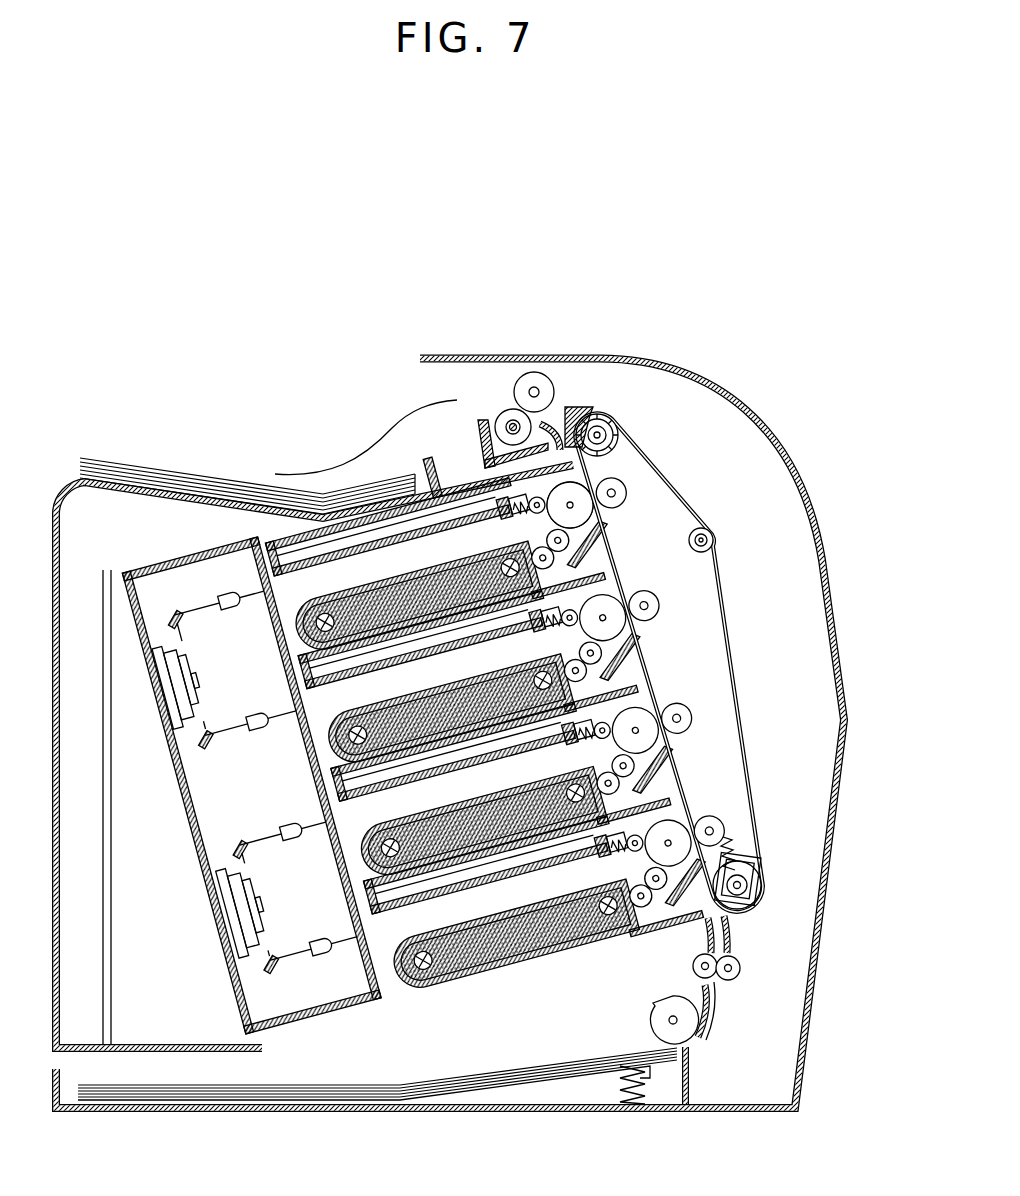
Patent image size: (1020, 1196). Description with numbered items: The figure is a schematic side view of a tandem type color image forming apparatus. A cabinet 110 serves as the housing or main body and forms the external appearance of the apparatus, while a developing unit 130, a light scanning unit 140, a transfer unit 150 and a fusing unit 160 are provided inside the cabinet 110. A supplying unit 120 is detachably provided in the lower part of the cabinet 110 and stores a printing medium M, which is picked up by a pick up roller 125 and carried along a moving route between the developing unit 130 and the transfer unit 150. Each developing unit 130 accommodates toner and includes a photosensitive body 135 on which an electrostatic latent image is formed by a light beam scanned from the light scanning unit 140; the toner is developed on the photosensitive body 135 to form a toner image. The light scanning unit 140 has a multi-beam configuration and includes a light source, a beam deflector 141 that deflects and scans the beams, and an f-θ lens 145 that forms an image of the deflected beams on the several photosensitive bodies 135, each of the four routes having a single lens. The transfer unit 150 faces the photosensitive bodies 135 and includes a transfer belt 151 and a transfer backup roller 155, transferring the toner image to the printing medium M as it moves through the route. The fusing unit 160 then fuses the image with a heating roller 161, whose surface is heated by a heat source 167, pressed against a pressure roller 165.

The cabinet 110 is at (548, 356).
The supplying unit 120 is at (712, 1082).
The pick up roller 125 is at (668, 1010).
The developing unit 130 is at (283, 645).
The photosensitive body 135 is at (600, 520).
The light scanning unit 140 is at (148, 558).
The beam deflector 141 is at (193, 655).
The f-θ lens 145 is at (235, 600).
The transfer unit 150 is at (733, 659).
The transfer belt 151 is at (730, 657).
The transfer backup roller 155 is at (621, 482).
The fusing unit 160 is at (483, 387).
The heating roller 161 is at (498, 412).
The pressure roller 165 is at (527, 372).
The heat source 167 is at (505, 429).
The printing medium M is at (519, 1060).